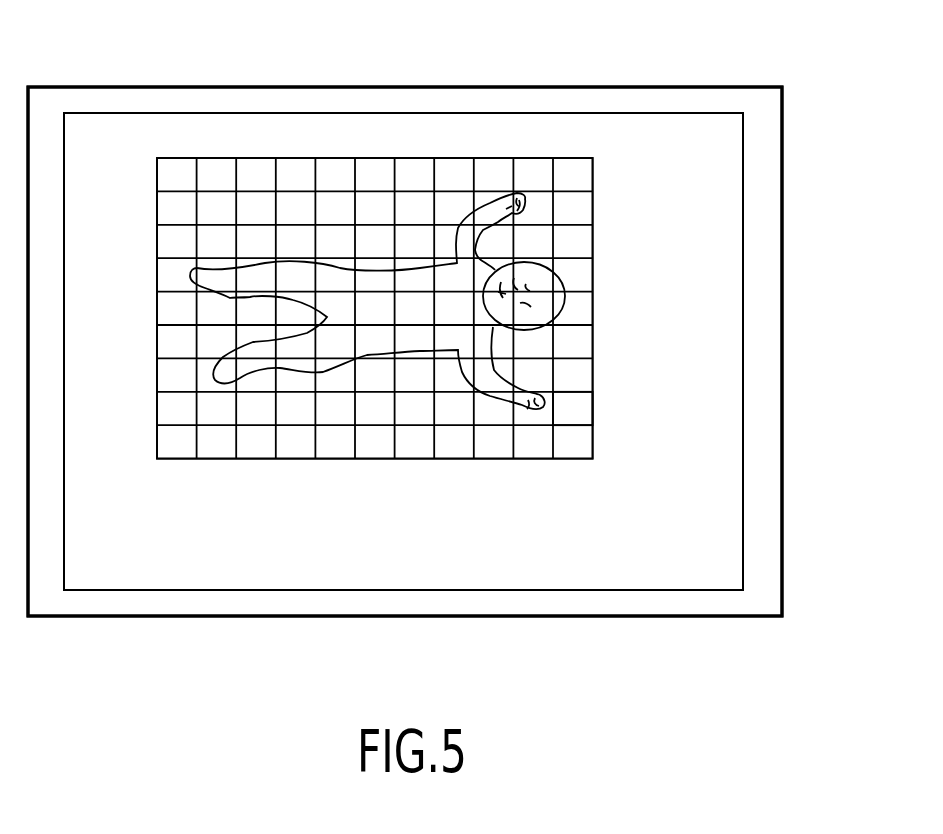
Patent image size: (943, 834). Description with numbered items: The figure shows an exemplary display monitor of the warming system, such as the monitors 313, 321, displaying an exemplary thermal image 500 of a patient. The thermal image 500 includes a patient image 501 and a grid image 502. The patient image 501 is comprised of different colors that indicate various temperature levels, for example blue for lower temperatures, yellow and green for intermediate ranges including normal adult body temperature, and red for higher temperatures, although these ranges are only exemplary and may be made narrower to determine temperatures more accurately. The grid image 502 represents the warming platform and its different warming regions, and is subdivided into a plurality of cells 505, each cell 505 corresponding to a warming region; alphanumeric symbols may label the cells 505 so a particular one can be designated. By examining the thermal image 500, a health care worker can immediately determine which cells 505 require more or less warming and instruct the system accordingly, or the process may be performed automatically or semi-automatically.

The thermal image 500 is at (576, 486).
The patient image 501 is at (370, 252).
The grid image 502 is at (592, 210).
The cell 505 is at (580, 408).
The monitor 313 is at (240, 622).
The monitor 321 is at (405, 351).